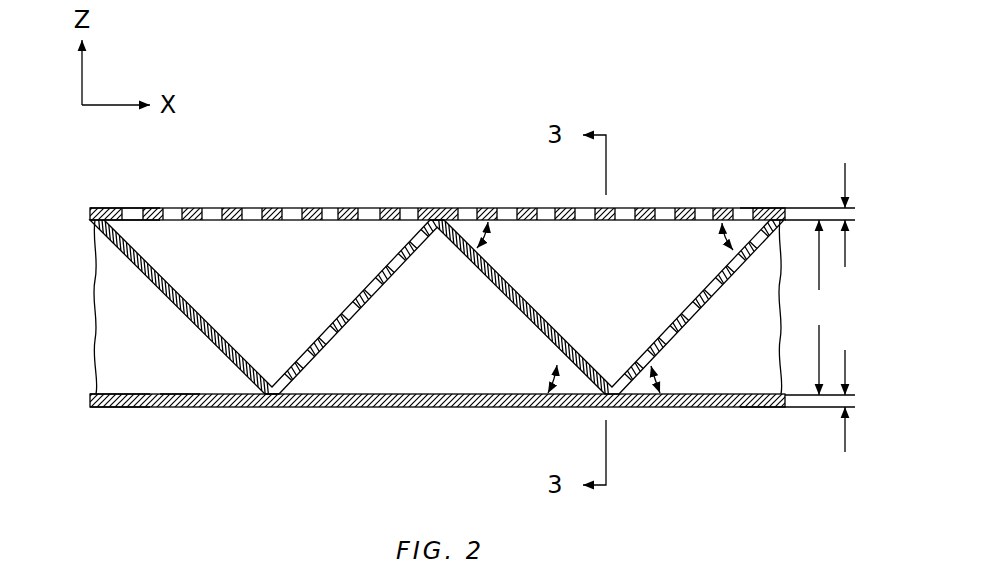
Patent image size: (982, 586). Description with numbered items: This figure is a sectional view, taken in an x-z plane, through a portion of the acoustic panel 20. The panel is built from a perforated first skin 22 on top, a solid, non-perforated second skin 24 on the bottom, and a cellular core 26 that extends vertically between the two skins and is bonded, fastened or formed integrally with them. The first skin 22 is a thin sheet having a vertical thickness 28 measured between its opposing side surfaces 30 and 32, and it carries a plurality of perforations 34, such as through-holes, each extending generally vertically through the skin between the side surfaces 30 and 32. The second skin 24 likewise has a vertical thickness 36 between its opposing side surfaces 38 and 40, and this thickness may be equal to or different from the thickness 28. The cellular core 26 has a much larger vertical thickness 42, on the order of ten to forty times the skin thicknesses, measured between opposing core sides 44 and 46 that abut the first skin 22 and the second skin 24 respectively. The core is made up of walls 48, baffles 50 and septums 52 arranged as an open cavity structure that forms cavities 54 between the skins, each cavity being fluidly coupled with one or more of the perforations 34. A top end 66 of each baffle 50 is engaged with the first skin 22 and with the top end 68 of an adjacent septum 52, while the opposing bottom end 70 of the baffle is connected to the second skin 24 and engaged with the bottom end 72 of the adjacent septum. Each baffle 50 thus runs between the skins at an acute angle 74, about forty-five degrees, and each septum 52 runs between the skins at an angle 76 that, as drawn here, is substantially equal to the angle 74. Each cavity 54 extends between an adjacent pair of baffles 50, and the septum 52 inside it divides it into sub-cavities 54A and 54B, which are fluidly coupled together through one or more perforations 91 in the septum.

The acoustic panel 20 is at (737, 101).
The first skin 22 is at (88, 214).
The second skin 24 is at (88, 401).
The cellular core 26 is at (90, 317).
The vertical thickness 28 is at (843, 181).
The side surface 30 is at (98, 207).
The side surface 32 is at (98, 253).
The perforations 34 is at (277, 207).
The vertical thickness 36 is at (843, 444).
The side surface 38 is at (98, 407).
The side surface 40 is at (95, 392).
The vertical thickness 42 is at (819, 307).
The core side 44 is at (757, 207).
The core side 46 is at (725, 407).
The walls 48 is at (176, 368).
The baffles 50 is at (233, 368).
The septums 52 is at (322, 368).
The cavities 54 is at (250, 281).
The sub-cavity 54A is at (255, 335).
The sub-cavity 54B is at (135, 353).
The top end 66 is at (418, 180).
The top end 68 is at (435, 207).
The bottom end 70 is at (270, 446).
The bottom end 72 is at (273, 407).
The angle 74 is at (487, 243).
The angle 76 is at (730, 248).
The perforations 91 is at (352, 318).